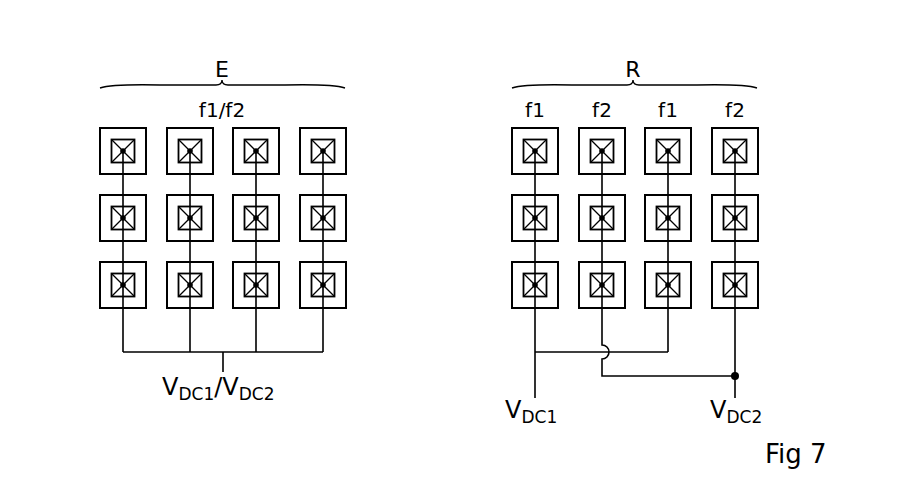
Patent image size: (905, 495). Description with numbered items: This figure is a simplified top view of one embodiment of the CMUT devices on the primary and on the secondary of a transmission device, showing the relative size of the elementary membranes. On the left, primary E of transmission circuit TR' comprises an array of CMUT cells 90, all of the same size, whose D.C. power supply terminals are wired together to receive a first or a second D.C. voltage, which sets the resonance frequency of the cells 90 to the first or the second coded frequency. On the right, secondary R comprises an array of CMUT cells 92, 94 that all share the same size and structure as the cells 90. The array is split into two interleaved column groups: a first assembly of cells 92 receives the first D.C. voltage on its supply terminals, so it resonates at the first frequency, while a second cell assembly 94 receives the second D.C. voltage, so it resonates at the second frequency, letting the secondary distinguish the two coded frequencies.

The CMUT cells 90 is at (106, 223).
The first assembly of cells 92 is at (518, 223).
The second cell assembly 94 is at (750, 223).